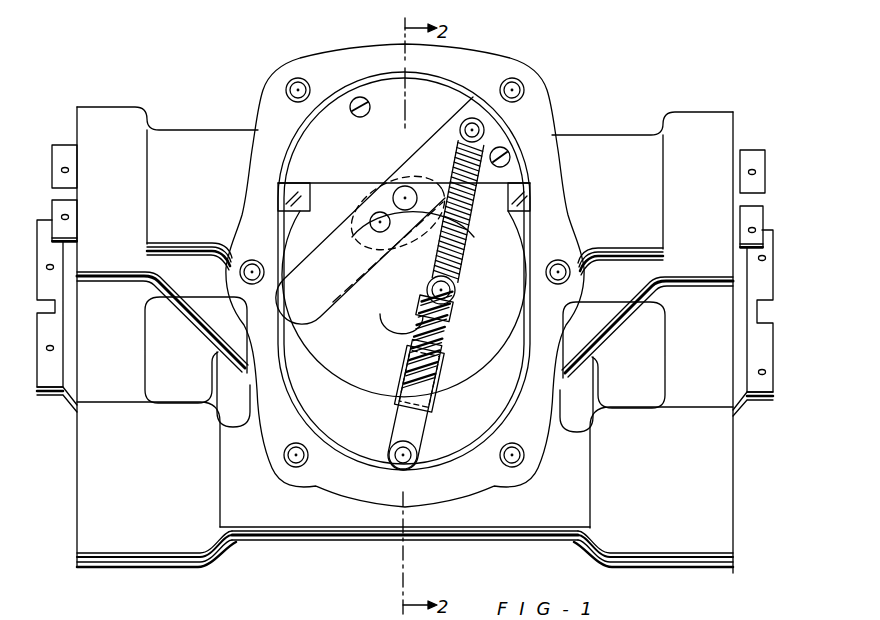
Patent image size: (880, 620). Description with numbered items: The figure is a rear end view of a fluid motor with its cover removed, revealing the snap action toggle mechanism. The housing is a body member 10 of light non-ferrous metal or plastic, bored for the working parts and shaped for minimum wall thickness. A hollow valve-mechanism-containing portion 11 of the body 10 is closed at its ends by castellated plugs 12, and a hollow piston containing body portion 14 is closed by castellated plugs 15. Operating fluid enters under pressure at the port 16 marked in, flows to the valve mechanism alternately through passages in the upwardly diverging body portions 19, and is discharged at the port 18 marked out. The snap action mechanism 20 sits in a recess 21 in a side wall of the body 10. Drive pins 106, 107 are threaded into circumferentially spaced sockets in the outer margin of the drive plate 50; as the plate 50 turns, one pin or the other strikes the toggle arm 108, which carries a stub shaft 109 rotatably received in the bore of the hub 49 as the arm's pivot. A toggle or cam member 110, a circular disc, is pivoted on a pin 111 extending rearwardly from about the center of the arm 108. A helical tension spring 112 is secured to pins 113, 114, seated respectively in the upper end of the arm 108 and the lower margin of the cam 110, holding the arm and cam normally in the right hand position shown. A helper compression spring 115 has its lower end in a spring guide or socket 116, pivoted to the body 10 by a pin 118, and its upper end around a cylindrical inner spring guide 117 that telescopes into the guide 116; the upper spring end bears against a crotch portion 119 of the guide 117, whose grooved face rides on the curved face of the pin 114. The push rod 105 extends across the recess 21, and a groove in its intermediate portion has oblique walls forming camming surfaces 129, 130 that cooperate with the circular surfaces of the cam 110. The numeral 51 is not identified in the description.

The body member 10 is at (608, 108).
The valve-mechanism-containing portion 11 is at (177, 146).
The castellated plugs 12 is at (55, 152).
The piston containing body portion 14 is at (114, 388).
The castellated plugs 15 is at (44, 394).
The port 16 is at (74, 518).
The port 18 is at (738, 512).
The upwardly diverging body portions 19 is at (207, 320).
The snap action mechanism 20 is at (505, 248).
The recess 21 is at (333, 372).
The hub 49 is at (196, 619).
The drive plate 50 is at (342, 139).
The element 51 is at (175, 619).
The push rod 105 is at (320, 186).
The drive pin 106 is at (480, 152).
The drive pin 107 is at (349, 98).
The toggle arm 108 is at (490, 149).
The stub shaft 109 is at (418, 191).
The toggle or cam member 110 is at (470, 283).
The pin 111 is at (357, 181).
The helical tension spring 112 is at (531, 185).
The pin 113 is at (484, 124).
The pin 114 is at (434, 283).
The compression spring 115 is at (452, 338).
The spring guide or socket 116 is at (398, 419).
The inner spring guide 117 is at (414, 344).
The pin 118 is at (418, 458).
The crotch portion 119 is at (428, 300).
The camming surface 129 is at (478, 228).
The camming surface 130 is at (375, 215).